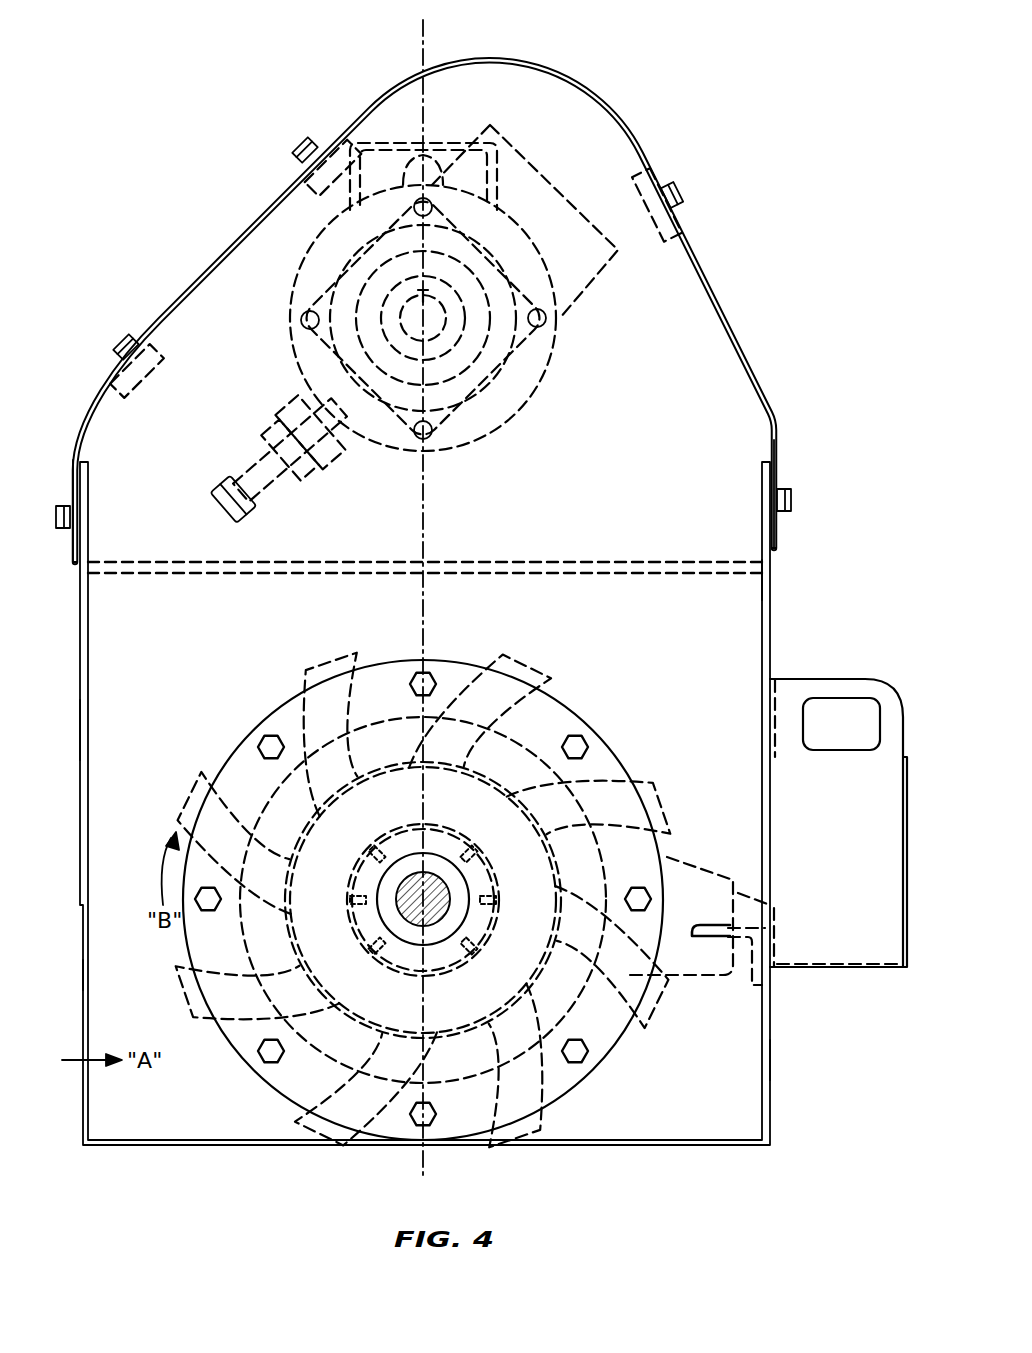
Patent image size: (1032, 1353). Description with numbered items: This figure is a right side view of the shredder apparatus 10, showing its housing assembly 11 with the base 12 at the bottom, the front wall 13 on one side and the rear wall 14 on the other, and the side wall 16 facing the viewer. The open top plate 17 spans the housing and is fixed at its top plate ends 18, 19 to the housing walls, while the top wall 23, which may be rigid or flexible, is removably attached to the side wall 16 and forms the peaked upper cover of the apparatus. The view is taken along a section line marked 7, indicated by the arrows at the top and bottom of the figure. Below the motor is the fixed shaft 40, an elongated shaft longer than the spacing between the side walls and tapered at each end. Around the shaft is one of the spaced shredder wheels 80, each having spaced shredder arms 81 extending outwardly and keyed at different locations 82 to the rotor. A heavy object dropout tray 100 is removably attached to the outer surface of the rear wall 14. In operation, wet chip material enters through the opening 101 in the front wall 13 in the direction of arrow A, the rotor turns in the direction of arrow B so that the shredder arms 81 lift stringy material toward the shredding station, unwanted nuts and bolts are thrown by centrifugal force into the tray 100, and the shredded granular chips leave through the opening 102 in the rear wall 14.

The section line 7- 7 is at (423, 20).
The shredder apparatus 10 is at (633, 78).
The housing assembly 11 is at (773, 645).
The base 12 is at (200, 1138).
The front wall 13 is at (78, 722).
The rear wall 14 is at (773, 580).
The side wall 16 is at (536, 622).
The open top plate 17 is at (322, 560).
The top plate end 18 is at (90, 560).
The top plate end 19 is at (760, 548).
The top wall 23 is at (708, 272).
The fixed shaft 40 is at (440, 905).
The shredder wheel 80 is at (355, 752).
The shredder arm 81 is at (552, 696).
The keyed location 82 is at (368, 830).
The heavy object dropout tray 100 is at (848, 676).
The opening in the front wall 101 is at (80, 980).
The opening in the rear wall 102 is at (771, 1058).